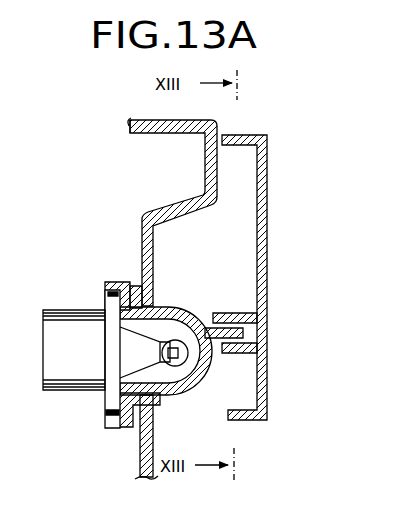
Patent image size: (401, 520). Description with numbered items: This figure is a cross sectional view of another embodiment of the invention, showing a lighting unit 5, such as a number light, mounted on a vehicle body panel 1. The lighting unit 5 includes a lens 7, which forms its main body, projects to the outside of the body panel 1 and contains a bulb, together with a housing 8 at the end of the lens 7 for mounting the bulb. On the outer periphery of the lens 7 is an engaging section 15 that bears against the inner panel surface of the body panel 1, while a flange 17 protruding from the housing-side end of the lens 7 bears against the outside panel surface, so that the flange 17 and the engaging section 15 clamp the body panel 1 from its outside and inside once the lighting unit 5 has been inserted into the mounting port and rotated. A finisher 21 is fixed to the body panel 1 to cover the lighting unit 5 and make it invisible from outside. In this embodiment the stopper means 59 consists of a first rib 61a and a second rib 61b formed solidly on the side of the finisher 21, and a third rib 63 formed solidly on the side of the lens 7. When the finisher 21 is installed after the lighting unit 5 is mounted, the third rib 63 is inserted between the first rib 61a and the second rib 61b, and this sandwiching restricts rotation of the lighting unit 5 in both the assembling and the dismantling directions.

The body panel 1 is at (145, 215).
The lighting unit 5 is at (84, 303).
The lens 7 is at (206, 391).
The housing 8 is at (70, 389).
The engaging section 15 is at (160, 307).
The flange 17 is at (125, 292).
The finisher 21 is at (268, 160).
The stopper means 59 is at (220, 302).
The first rib 61a is at (245, 315).
The second rib 61b is at (245, 350).
The third rib 63 is at (243, 334).